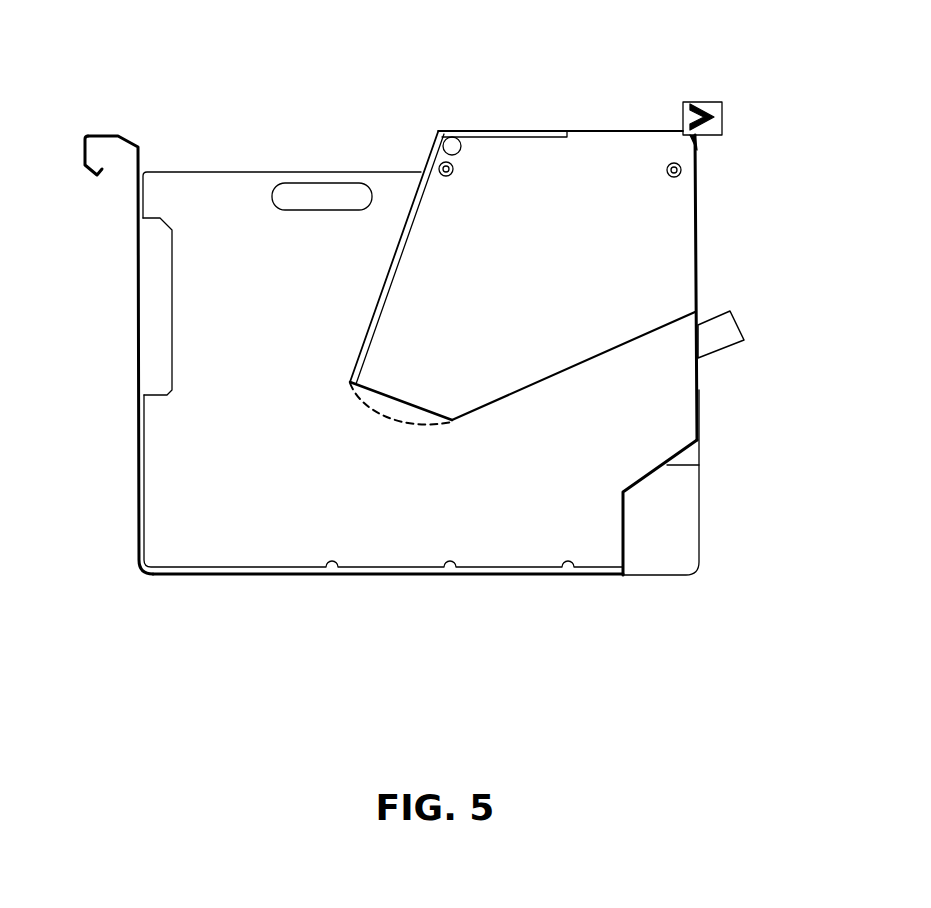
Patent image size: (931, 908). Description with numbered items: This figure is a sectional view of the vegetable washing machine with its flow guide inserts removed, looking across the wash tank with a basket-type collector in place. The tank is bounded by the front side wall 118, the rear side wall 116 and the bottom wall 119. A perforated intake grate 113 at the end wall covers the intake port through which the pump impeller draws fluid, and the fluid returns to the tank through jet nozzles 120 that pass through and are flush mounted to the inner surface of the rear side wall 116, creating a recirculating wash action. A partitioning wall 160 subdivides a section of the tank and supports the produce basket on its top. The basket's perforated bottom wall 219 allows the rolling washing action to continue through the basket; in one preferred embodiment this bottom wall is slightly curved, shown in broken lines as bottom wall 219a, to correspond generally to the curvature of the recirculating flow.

The partitioning wall 160 is at (203, 213).
The front side wall 118 is at (139, 415).
The bottom wall 119 is at (355, 576).
The rear side wall 116 is at (700, 397).
The perforated intake grate 113 is at (623, 507).
The jet nozzle 120 is at (717, 327).
The bottom wall 219 is at (402, 397).
The bottom wall 219a is at (350, 403).